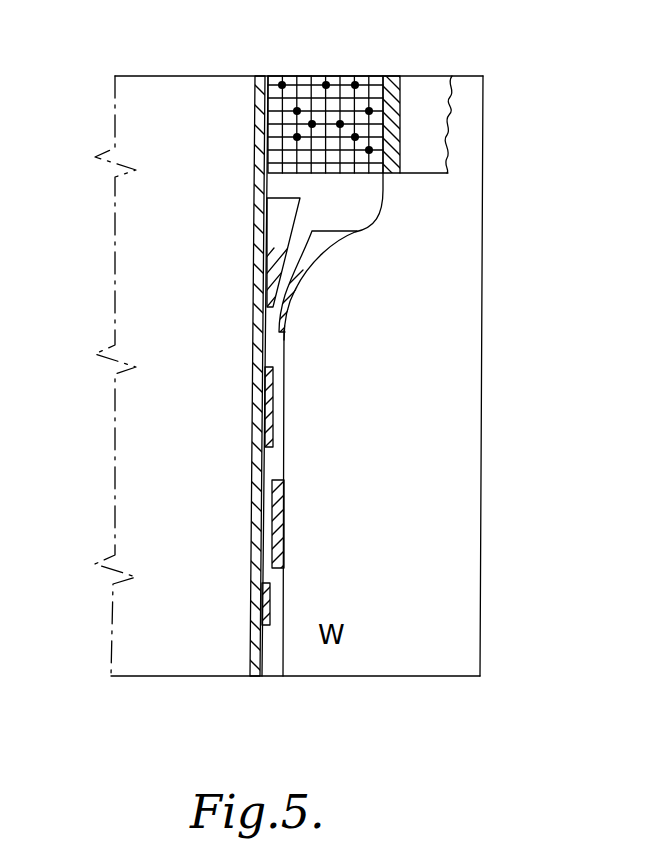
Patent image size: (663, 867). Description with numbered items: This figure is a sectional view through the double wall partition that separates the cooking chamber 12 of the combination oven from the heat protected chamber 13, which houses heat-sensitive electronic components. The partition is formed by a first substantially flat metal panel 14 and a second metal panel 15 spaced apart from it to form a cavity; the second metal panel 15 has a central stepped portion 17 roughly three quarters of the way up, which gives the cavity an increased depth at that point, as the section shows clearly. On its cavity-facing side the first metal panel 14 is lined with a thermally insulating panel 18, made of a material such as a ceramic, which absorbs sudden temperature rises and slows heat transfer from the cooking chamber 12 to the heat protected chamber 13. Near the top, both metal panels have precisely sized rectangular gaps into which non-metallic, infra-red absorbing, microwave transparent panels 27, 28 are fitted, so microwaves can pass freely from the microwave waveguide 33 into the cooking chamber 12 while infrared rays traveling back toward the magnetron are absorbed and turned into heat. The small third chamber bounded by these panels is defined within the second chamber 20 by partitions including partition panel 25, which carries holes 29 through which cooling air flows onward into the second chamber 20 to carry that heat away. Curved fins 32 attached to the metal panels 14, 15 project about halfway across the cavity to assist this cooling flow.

The cooking chamber 12 is at (177, 352).
The heat protected chamber 13 is at (440, 527).
The first metal panel 14 is at (295, 699).
The second metal panel 15 is at (352, 357).
The curved cavity wall 17 is at (387, 192).
The thermally insulating panel 18 is at (265, 465).
The second chamber 20 is at (280, 602).
The partition panel 25 is at (303, 80).
The infra-red absorbing microwave transparent panel 27 is at (257, 93).
The infra-red absorbing microwave transparent panel 28 is at (400, 108).
The holes 29 is at (312, 125).
The curved fins 32 is at (273, 232).
The microwave waveguide 33 is at (447, 128).